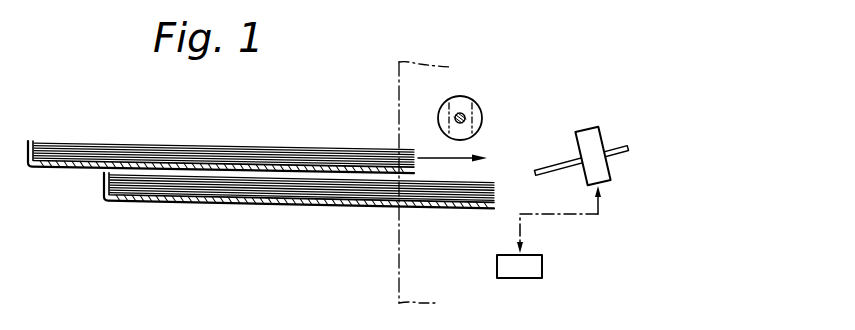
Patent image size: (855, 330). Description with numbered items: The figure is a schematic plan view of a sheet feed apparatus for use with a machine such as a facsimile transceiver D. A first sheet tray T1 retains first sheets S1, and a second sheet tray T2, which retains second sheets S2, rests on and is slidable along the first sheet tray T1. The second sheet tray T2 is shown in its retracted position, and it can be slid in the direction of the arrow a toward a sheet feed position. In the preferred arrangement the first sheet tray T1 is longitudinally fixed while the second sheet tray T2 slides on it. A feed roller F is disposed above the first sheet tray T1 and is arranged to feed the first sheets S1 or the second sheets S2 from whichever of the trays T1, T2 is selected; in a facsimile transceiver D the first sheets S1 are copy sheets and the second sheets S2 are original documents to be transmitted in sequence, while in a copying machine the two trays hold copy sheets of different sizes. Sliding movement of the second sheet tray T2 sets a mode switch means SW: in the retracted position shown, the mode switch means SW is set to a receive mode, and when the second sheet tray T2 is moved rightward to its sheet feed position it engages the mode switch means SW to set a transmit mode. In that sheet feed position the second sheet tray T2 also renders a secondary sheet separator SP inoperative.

The first sheets S1 is at (238, 192).
The second sheets S2 is at (207, 155).
The first sheet tray T1 is at (143, 205).
The second sheet tray T2 is at (62, 167).
The facsimile transceiver D is at (398, 97).
The feed roller F is at (474, 101).
The arrow a is at (419, 158).
The secondary sheet separator SP is at (585, 138).
The mode switch means SW is at (518, 267).